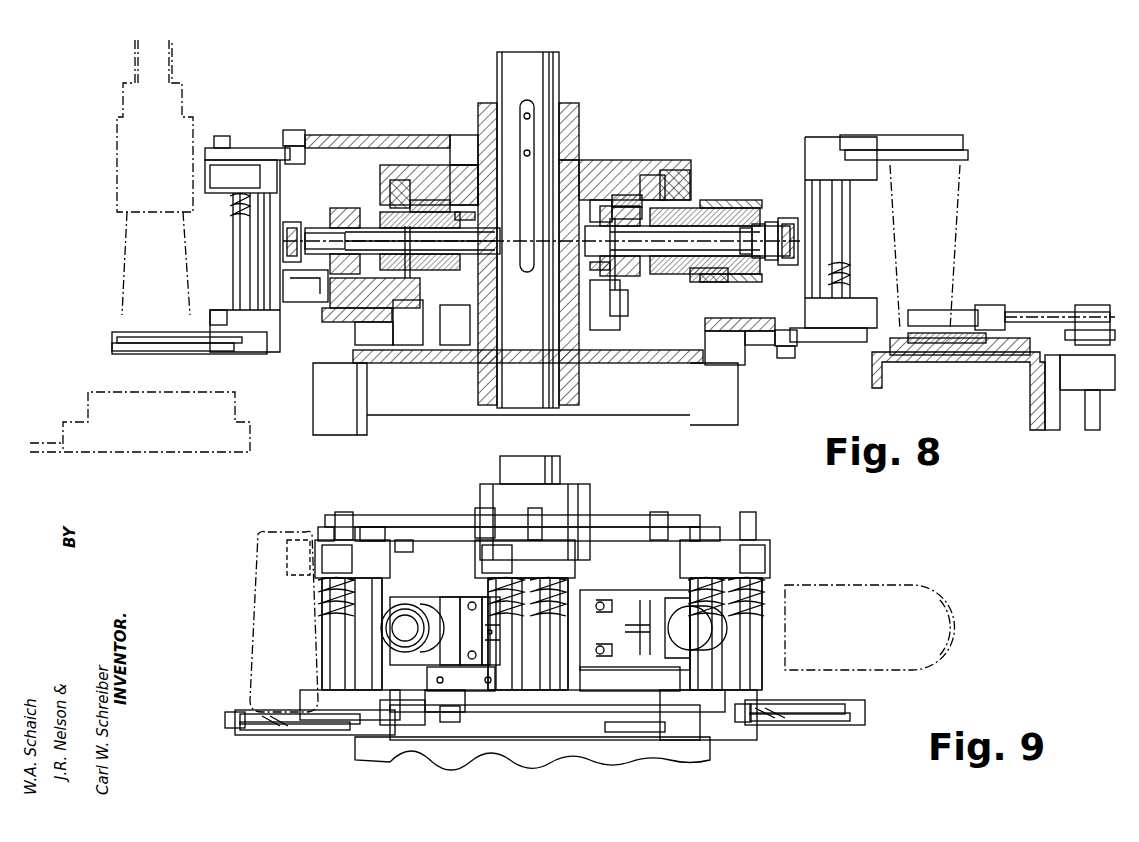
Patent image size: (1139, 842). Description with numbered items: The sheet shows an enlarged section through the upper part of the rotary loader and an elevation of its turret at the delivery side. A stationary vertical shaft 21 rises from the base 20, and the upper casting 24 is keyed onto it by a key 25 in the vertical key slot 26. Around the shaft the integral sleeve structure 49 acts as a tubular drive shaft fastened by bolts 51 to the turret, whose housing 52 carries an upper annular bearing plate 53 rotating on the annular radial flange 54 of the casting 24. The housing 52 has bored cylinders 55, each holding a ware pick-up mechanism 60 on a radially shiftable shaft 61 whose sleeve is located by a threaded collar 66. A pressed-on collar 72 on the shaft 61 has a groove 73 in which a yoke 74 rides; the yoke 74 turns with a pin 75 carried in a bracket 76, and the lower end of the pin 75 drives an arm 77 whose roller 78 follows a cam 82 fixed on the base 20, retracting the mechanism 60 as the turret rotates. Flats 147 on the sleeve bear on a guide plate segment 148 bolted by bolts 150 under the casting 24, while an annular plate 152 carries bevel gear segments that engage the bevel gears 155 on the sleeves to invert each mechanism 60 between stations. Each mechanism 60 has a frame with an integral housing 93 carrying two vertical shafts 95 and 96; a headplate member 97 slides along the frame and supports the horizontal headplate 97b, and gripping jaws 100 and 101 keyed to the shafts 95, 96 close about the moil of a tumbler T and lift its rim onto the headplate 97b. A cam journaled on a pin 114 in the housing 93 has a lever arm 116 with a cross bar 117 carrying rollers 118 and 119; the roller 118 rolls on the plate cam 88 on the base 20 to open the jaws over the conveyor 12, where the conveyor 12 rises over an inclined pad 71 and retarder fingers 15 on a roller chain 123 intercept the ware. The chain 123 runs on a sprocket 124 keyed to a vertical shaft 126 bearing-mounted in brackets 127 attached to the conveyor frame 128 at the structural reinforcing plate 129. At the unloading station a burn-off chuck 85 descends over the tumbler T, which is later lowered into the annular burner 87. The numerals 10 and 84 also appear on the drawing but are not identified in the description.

In FIG. 8, the welding apparatus 10 is at (320, 230).
In FIG. 8, the conveyor 12 is at (915, 357).
In FIG. 8, the retarder finger 15 is at (965, 312).
In FIG. 8, the base 20 is at (408, 395).
In FIG. 9, the base 20 is at (712, 750).
In FIG. 8, the vertical shaft 21 is at (528, 230).
In FIG. 9, the vertical shaft 21 is at (530, 470).
In FIG. 8, the upper casting 24 is at (580, 140).
In FIG. 9, the upper casting 24 is at (572, 490).
In FIG. 8, the key 25 is at (568, 115).
In FIG. 8, the vertical key slot 26 is at (526, 262).
In FIG. 8, the integral sleeve structure 49 is at (455, 200).
In FIG. 8, the bolts 51 is at (438, 314).
In FIG. 8, the housing 52 is at (338, 212).
In FIG. 9, the housing 52 is at (449, 631).
In FIG. 8, the upper annular bearing plate 53 is at (660, 180).
In FIG. 9, the upper annular bearing plate 53 is at (440, 613).
In FIG. 8, the annular radial flange 54 is at (398, 178).
In FIG. 8, the bored cylinder 55 is at (356, 210).
In FIG. 8, the ware pick-up mechanism 60 is at (240, 148).
In FIG. 8, the shaft 61 is at (760, 226).
In FIG. 9, the shaft 61 is at (405, 618).
In FIG. 9, the threaded collar 66 is at (428, 612).
In FIG. 8, the inclined pad 71 is at (950, 345).
In FIG. 8, the collar 72 is at (775, 220).
In FIG. 9, the collar 72 is at (672, 612).
In FIG. 8, the groove 73 is at (775, 260).
In FIG. 9, the groove 73 is at (690, 605).
In FIG. 8, the yoke 74 is at (290, 222).
In FIG. 9, the yoke 74 is at (485, 640).
In FIG. 9, the pin 75 is at (480, 634).
In FIG. 9, the bracket 76 is at (484, 600).
In FIG. 8, the arm 77 is at (304, 295).
In FIG. 9, the arm 77 is at (553, 679).
In FIG. 9, the roller 78 is at (440, 712).
In FIG. 8, the cam 82 is at (340, 322).
In FIG. 8, the cross bar 84 is at (345, 135).
In FIG. 9, the cross bar 84 is at (612, 516).
In FIG. 8, the burn-off chuck 85 is at (128, 162).
In FIG. 8, the annular burner 87 is at (132, 440).
In FIG. 8, the cam 88 is at (755, 332).
In FIG. 8, the housing 93 is at (241, 176).
In FIG. 9, the housing 93 is at (542, 559).
In FIG. 8, the shaft 95 is at (236, 250).
In FIG. 9, the shaft 95 is at (548, 630).
In FIG. 9, the shaft 96 is at (500, 656).
In FIG. 8, the headplate member 97 is at (266, 352).
In FIG. 9, the headplate member 97 is at (390, 738).
In FIG. 8, the horizontal headplate 97b is at (140, 345).
In FIG. 9, the horizontal headplate 97b is at (302, 736).
In FIG. 8, the gripping jaw 100 is at (118, 343).
In FIG. 9, the gripping jaw 100 is at (292, 730).
In FIG. 9, the gripping jaw 101 is at (234, 722).
In FIG. 9, the pin 114 is at (325, 530).
In FIG. 8, the lever arm 116 is at (238, 148).
In FIG. 9, the lever arm 116 is at (370, 528).
In FIG. 9, the cross bar 117 is at (420, 530).
In FIG. 8, the roller 118 is at (306, 150).
In FIG. 9, the roller 118 is at (413, 545).
In FIG. 8, the roller 119 is at (292, 130).
In FIG. 9, the roller 119 is at (344, 514).
In FIG. 8, the roller chain 123 is at (1010, 310).
In FIG. 8, the sprocket 124 is at (1072, 312).
In FIG. 8, the vertical shaft 126 is at (1090, 432).
In FIG. 8, the brackets 127 is at (1087, 372).
In FIG. 8, the conveyor frame 128 is at (1030, 385).
In FIG. 8, the structural reinforcing plate 129 is at (1052, 432).
In FIG. 8, the flat 147 is at (412, 198).
In FIG. 8, the guide plate segment 148 is at (627, 207).
In FIG. 8, the bolts 150 is at (600, 200).
In FIG. 8, the annular plate 152 is at (628, 195).
In FIG. 8, the bevel gear 155 is at (466, 212).
In FIG. 8, the tumbler T is at (134, 256).
In FIG. 9, the tumbler T is at (278, 584).